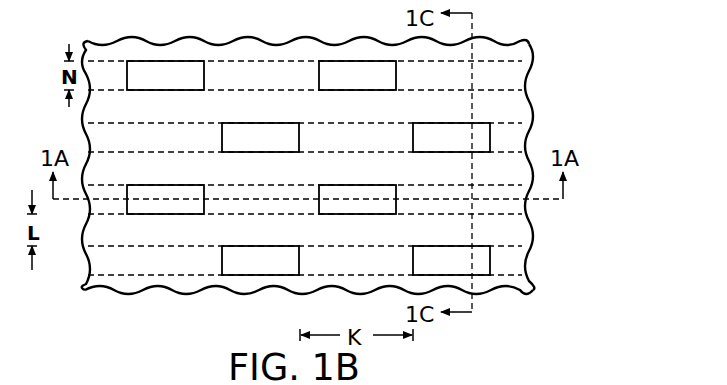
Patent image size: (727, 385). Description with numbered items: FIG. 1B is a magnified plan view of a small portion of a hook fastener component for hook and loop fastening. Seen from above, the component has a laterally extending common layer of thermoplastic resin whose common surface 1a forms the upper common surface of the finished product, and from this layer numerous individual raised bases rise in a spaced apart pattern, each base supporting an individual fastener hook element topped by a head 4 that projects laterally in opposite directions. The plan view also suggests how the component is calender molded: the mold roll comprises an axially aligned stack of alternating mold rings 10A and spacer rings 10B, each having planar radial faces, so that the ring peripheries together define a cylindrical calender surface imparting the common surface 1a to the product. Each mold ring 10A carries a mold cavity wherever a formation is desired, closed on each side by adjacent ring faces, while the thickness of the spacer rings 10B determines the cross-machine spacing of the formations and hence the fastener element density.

The head 4 is at (173, 61).
The mold ring 10A is at (382, 151).
The spacer ring 10B is at (382, 184).
The common surface 1a is at (372, 273).